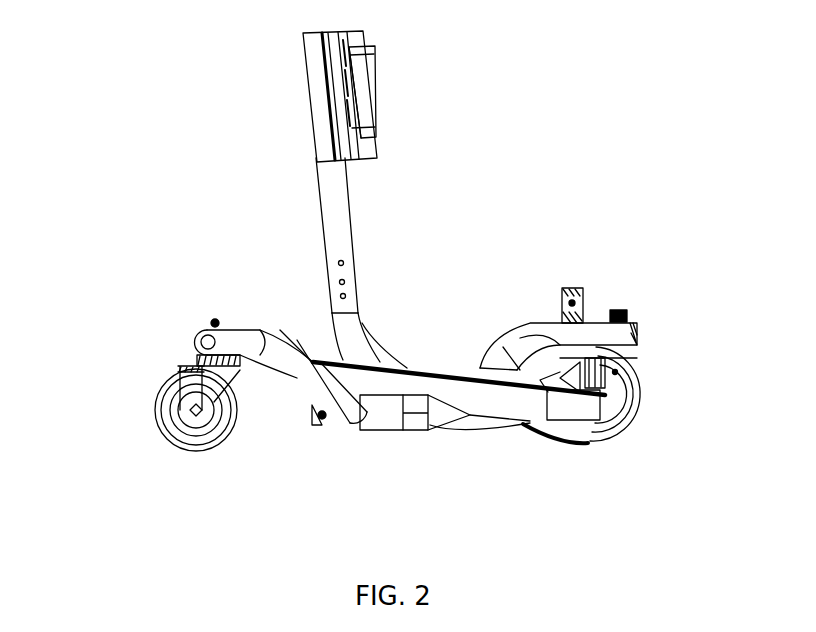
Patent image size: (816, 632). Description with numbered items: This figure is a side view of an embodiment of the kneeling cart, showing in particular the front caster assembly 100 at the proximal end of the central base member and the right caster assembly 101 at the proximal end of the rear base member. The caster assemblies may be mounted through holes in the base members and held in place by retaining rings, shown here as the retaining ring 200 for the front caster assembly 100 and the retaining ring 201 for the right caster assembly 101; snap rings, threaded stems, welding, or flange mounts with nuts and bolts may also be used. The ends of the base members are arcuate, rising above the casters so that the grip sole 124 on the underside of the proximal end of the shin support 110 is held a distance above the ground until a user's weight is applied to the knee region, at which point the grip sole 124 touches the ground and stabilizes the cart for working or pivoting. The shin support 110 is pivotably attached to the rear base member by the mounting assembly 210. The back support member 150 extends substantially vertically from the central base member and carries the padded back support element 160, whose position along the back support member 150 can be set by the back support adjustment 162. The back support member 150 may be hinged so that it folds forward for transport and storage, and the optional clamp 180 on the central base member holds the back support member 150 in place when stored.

The front caster assembly 100 is at (615, 372).
The right caster assembly 101 is at (213, 377).
The shin support 110 is at (487, 397).
The grip sole 124 is at (538, 423).
The back support member 150 is at (335, 208).
The back support element 160 is at (355, 88).
The back support adjustment 162 is at (320, 65).
The clamp 180 is at (583, 297).
The retaining ring 200 is at (623, 315).
The retaining ring 201 is at (215, 323).
The mounting assembly 210 is at (322, 415).